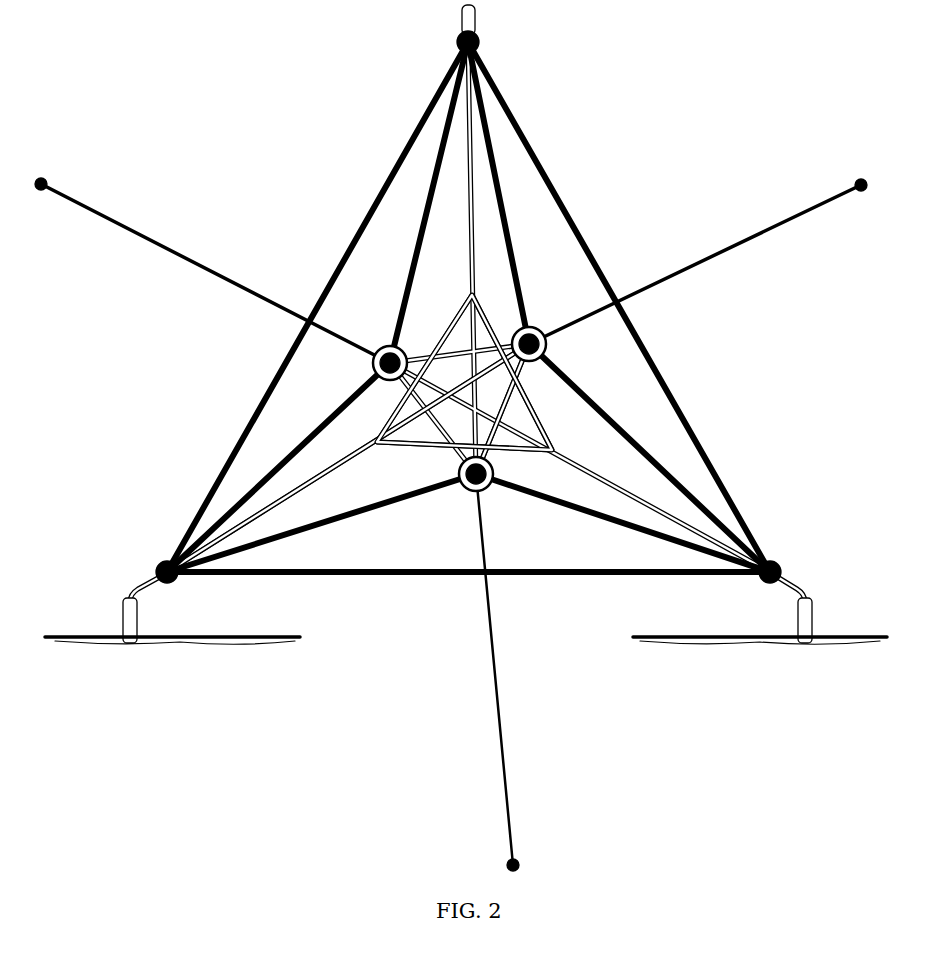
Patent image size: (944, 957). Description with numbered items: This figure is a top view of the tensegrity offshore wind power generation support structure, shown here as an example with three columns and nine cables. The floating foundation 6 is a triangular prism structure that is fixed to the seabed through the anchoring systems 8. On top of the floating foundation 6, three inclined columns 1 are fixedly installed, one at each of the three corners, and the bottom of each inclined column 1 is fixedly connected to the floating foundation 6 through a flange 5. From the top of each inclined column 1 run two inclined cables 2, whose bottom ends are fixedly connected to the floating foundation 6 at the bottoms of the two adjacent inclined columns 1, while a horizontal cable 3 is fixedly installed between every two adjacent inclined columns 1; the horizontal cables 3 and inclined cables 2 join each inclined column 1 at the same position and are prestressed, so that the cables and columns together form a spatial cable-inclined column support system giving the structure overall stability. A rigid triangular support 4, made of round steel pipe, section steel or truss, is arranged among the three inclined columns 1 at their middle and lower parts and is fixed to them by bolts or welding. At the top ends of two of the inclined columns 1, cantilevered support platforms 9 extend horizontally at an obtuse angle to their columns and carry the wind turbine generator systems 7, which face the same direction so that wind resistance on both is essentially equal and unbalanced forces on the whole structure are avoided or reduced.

The inclined column 1 is at (303, 488).
The inclined cable 2 is at (408, 278).
The horizontal cable 3 is at (612, 287).
The rigid triangular support 4 is at (437, 342).
The flange 5 is at (478, 48).
The floating foundation 6 is at (503, 400).
The wind turbine generator system 7 is at (87, 633).
The anchoring system 8 is at (492, 657).
The cantilevered support platform 9 is at (138, 597).